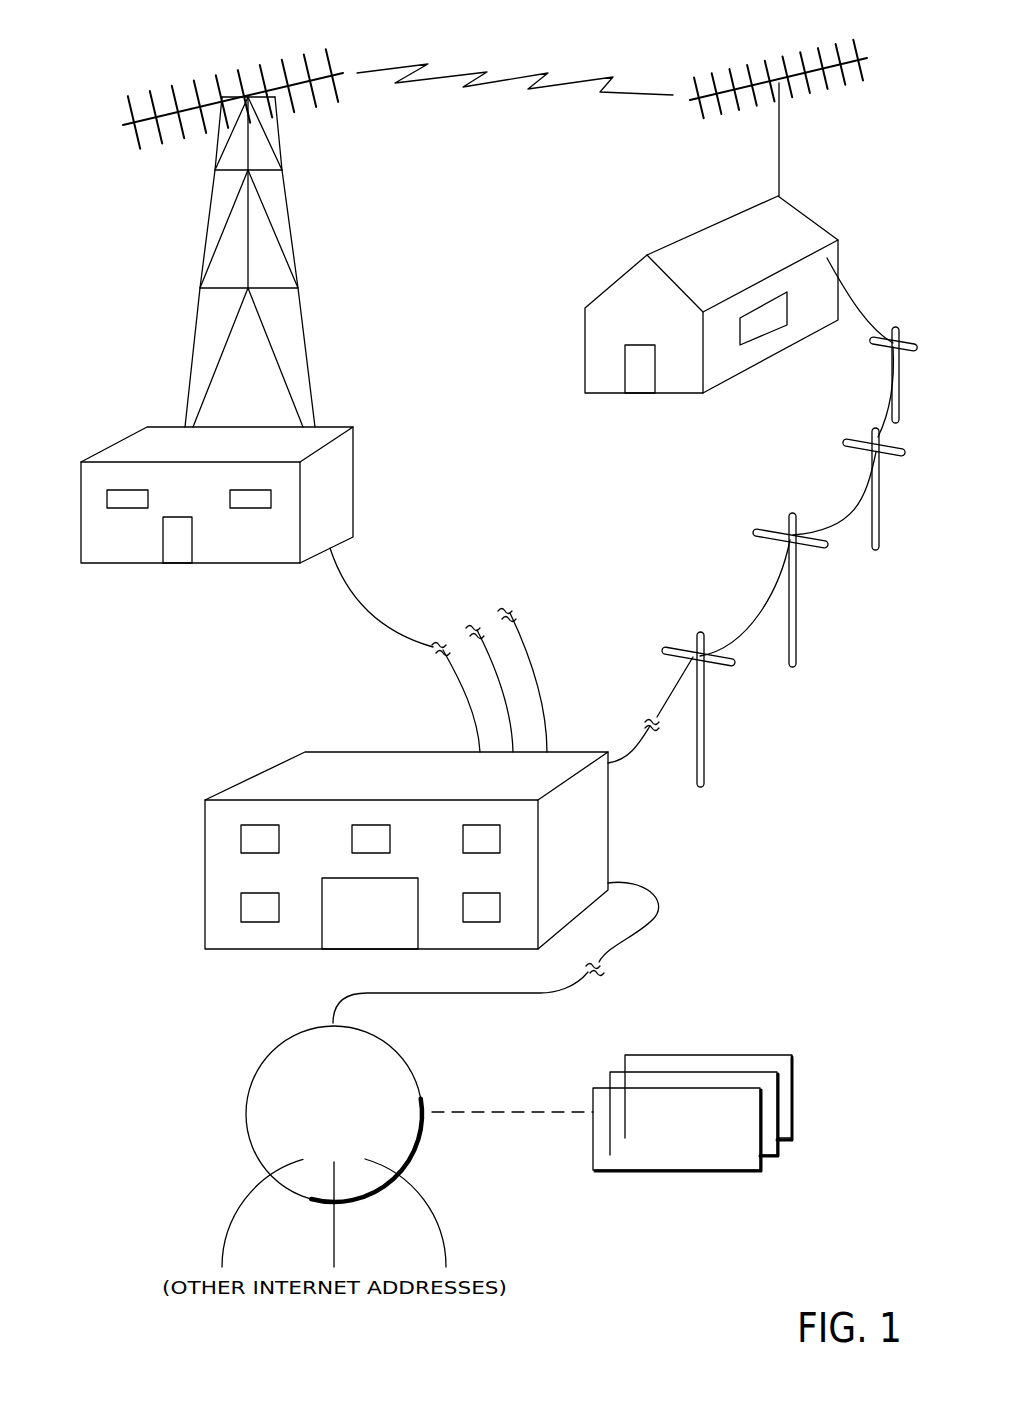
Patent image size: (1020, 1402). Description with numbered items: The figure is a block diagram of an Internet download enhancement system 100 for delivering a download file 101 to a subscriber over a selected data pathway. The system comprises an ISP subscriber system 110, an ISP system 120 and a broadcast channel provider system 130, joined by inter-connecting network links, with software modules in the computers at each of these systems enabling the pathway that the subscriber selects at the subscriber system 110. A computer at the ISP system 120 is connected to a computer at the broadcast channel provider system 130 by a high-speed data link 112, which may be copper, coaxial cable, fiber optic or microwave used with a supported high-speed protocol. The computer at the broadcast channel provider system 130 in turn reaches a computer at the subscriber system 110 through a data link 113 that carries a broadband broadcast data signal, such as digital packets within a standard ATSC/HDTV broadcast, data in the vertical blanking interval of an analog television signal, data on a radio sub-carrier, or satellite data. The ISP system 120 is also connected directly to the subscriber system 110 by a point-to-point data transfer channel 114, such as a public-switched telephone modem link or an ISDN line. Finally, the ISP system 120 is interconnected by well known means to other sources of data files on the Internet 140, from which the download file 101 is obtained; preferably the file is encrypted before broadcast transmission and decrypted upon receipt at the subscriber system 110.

The Internet download enhancement system 100 is at (895, 21).
The download file 101 is at (723, 1153).
The ISP subscriber system 110 is at (800, 220).
The high-speed data link 112 is at (547, 732).
The data link carrying broadcast data signal 113 is at (473, 82).
The point-to-point data transfer channel 114 is at (862, 490).
The ISP system 120 is at (205, 903).
The broadcast channel provider system 130 is at (340, 482).
The Internet 140 is at (313, 1141).